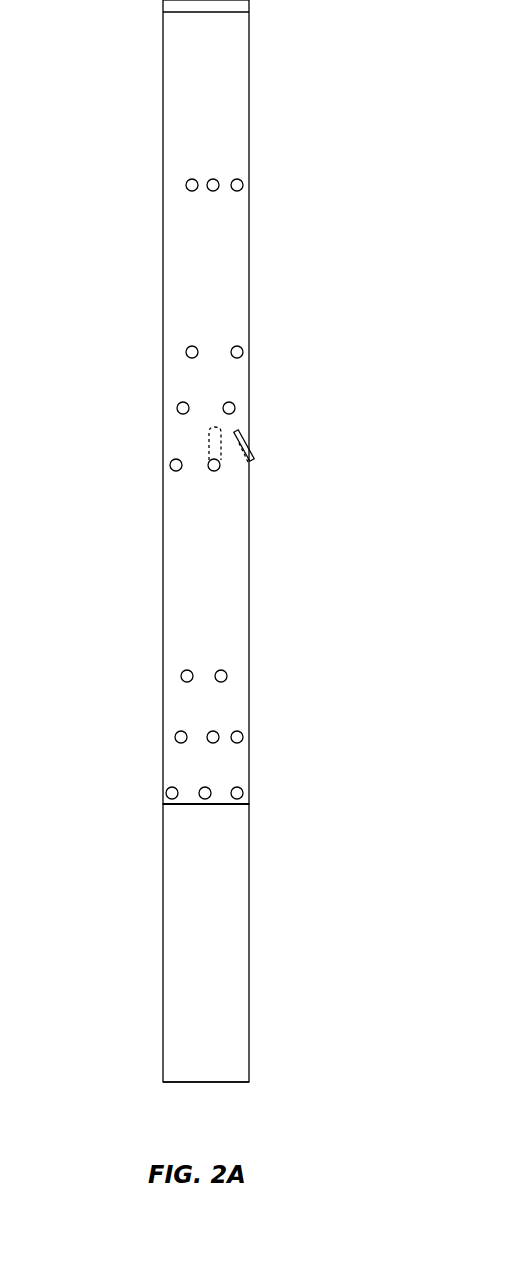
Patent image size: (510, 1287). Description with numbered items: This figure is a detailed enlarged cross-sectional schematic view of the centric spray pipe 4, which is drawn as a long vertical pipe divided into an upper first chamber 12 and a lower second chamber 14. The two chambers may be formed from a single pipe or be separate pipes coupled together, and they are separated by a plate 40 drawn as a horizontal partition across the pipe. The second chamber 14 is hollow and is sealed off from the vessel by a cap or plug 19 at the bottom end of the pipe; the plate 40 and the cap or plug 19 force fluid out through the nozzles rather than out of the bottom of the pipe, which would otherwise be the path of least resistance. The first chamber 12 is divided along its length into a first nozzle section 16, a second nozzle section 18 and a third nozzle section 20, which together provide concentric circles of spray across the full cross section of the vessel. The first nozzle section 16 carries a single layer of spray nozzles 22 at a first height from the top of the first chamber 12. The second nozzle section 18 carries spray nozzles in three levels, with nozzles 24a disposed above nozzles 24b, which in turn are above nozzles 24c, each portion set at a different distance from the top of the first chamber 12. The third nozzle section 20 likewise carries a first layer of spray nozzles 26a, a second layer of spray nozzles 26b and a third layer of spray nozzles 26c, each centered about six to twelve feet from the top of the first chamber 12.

The centric spray pipe 4 is at (312, 67).
The first chamber 12 is at (70, 15).
The second chamber 14 is at (71, 828).
The first nozzle section 16 is at (148, 155).
The second nozzle section 18 is at (148, 232).
The cap or plug 19 is at (225, 1082).
The third nozzle section 20 is at (149, 508).
The spray nozzles 22 is at (237, 185).
The spray nozzles 24a is at (237, 352).
The spray nozzles 24b is at (229, 408).
The spray nozzles 24c is at (214, 465).
The spray nozzles 26a is at (221, 676).
The spray nozzles 26b is at (237, 737).
The spray nozzles 26c is at (237, 793).
The plate 40 is at (222, 804).